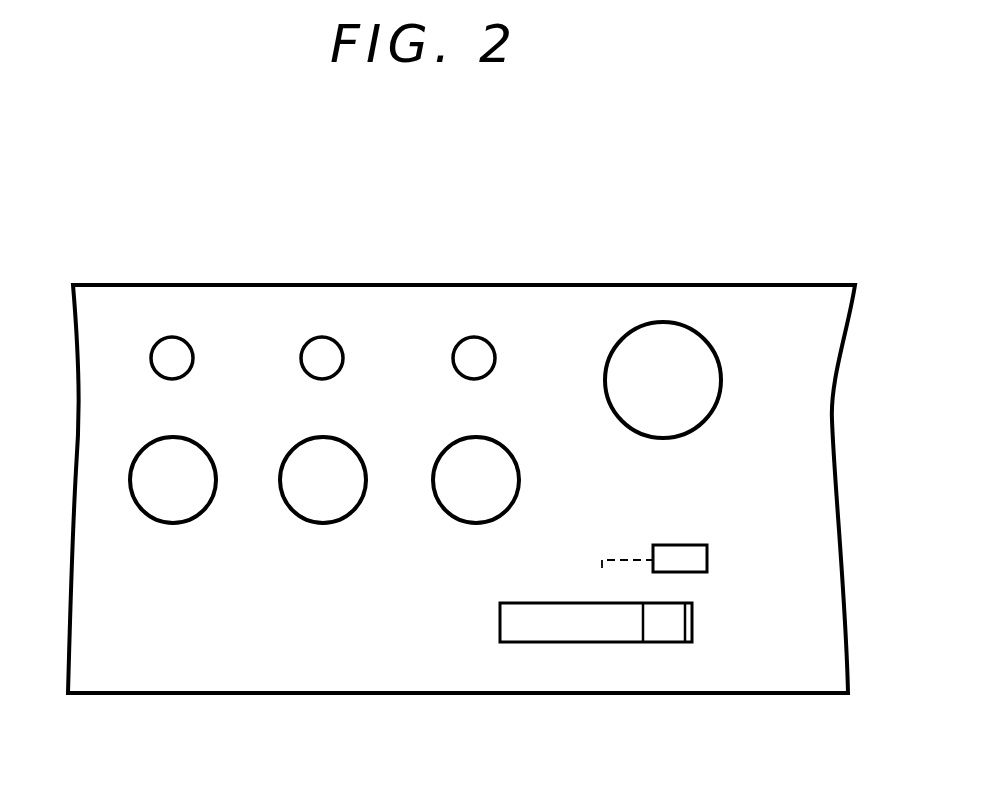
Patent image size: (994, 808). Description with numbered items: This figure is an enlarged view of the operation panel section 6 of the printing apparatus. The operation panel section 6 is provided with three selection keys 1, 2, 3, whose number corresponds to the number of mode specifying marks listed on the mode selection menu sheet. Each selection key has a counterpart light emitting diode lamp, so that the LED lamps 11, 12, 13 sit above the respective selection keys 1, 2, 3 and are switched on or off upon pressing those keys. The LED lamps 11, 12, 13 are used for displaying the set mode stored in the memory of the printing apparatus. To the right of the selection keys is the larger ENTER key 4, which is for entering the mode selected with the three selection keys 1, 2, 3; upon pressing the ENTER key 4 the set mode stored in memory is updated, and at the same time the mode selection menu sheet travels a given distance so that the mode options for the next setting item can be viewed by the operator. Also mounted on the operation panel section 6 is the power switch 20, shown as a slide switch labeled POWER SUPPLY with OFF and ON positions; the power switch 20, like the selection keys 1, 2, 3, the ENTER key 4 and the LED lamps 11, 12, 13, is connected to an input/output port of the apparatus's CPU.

The operation panel section 6 is at (637, 217).
The LED lamp 11 is at (175, 355).
The LED lamp 12 is at (321, 355).
The LED lamp 13 is at (478, 355).
The ENTER key 4 is at (668, 342).
The selection key 1 is at (170, 505).
The selection key 2 is at (327, 505).
The selection key 3 is at (473, 505).
The power switch 20 is at (677, 619).